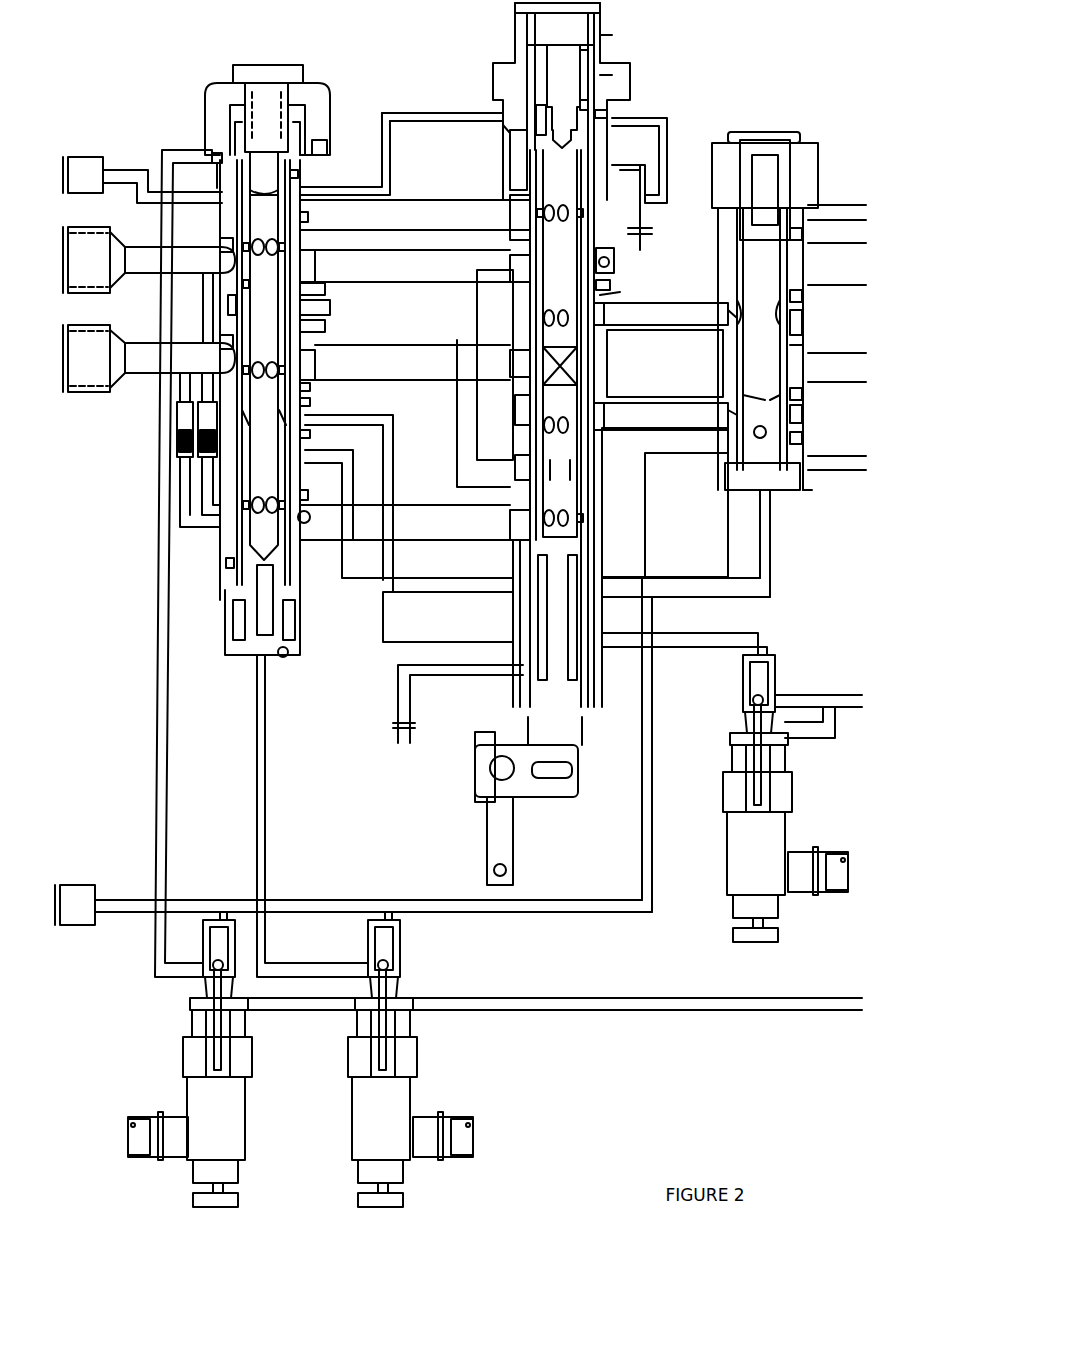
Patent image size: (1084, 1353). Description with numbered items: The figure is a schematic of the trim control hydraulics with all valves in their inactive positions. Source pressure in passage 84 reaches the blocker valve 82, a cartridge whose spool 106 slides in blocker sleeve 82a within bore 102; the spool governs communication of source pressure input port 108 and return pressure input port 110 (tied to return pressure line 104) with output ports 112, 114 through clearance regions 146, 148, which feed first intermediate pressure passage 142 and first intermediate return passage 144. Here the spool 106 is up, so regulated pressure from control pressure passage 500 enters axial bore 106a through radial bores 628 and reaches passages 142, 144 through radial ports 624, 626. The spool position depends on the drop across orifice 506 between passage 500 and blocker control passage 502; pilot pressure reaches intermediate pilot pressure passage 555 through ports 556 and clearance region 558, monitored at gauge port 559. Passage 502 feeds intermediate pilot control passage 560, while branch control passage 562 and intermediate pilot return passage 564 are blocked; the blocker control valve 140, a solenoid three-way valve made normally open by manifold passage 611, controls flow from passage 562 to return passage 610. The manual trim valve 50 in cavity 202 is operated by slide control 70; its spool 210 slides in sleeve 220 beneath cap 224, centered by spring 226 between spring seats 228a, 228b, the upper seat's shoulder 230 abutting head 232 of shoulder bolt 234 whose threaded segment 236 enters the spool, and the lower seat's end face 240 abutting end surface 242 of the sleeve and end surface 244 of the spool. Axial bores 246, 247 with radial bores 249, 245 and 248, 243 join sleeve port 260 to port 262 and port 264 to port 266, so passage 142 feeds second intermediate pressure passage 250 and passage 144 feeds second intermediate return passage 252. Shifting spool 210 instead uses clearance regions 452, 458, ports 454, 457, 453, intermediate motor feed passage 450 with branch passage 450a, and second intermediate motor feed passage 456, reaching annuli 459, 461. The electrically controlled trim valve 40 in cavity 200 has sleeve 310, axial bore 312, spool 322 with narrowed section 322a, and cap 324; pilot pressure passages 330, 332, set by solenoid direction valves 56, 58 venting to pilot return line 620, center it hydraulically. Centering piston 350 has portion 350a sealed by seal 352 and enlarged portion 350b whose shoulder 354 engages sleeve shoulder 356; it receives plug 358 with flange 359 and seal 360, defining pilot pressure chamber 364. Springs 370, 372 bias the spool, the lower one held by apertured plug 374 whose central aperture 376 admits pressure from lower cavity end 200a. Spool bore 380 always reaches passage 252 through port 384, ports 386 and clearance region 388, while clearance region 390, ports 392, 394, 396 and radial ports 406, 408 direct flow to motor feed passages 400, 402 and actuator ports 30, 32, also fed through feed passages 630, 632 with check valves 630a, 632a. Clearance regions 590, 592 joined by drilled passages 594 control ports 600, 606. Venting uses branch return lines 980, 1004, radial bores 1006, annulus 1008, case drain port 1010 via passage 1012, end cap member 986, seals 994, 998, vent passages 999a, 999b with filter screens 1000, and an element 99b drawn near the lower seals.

The actuator port 30 is at (80, 368).
The actuator port 32 is at (80, 270).
The electrically controlled trim valve 40 is at (268, 50).
The manual trim valve 50 is at (626, 8).
The solenoid operated direction valve 56 is at (255, 1125).
The solenoid operated direction valve 58 is at (420, 1100).
The slide control 70 is at (465, 832).
The blocker valve 82 is at (772, 110).
The blocker sleeve 82a is at (815, 195).
The source pressure passage 84 is at (840, 272).
The spool end 99b is at (590, 650).
The bore 102 is at (803, 414).
The return pressure line 104 is at (820, 374).
The blocker spool 106 is at (803, 323).
The axial bore 106a is at (725, 353).
The source pressure input port 108 is at (805, 238).
The return pressure input port 110 is at (800, 352).
The pressure output port 112 is at (735, 318).
The return output port 114 is at (735, 416).
The blocker control valve 140 is at (735, 915).
The first intermediate pressure passage 142 is at (650, 324).
The first intermediate return passage 144 is at (645, 420).
The clearance region 146 is at (803, 296).
The clearance region 148 is at (803, 394).
The cavity 200 is at (311, 405).
The lower end of cavity 200a is at (283, 658).
The cavity 202 is at (614, 264).
The spool 210 is at (548, 378).
The sleeve 220 is at (610, 287).
The cap 224 is at (515, 8).
The spring 226 is at (527, 32).
The upper spring seat 228a is at (612, 32).
The lower spring seat 228b is at (590, 100).
The shoulder 230 is at (585, 55).
The head 232 is at (550, 38).
The shoulder bolt 234 is at (552, 82).
The threaded segment 236 is at (540, 115).
The end face 240 is at (518, 140).
The end surface 242 is at (607, 114).
The radial bores 243 is at (563, 505).
The end surface 244 is at (595, 108).
The radial bores 245 is at (560, 223).
The axial bore 246 is at (548, 268).
The axial bore 247 is at (558, 471).
The radial bores 248 is at (559, 436).
The radial bores 249 is at (559, 327).
The second intermediate pressure passage 250 is at (428, 224).
The second intermediate return passage 252 is at (403, 530).
The sleeve port 260 is at (603, 316).
The sleeve port 262 is at (512, 236).
The sleeve port 264 is at (606, 406).
The sleeve port 266 is at (510, 521).
The sleeve 310 is at (312, 330).
The axial bore 312 is at (310, 320).
The spool 322 is at (280, 345).
The narrowed section 322a is at (272, 565).
The cap 324 is at (290, 66).
The pilot pressure passage 330 is at (165, 825).
The pilot pressure passage 332 is at (265, 825).
The centering piston 350 is at (264, 173).
The piston portion 350a is at (212, 156).
The enlarged portion 350b is at (310, 125).
The seal 352 is at (298, 184).
The shoulder 354 is at (327, 148).
The shoulder 356 is at (265, 116).
The plug 358 is at (266, 184).
The flange 359 is at (308, 220).
The seal 360 is at (225, 125).
The pilot pressure chamber 364 is at (280, 95).
The biasing spring 370 is at (222, 86).
The biasing spring 372 is at (240, 648).
The apertured plug 374 is at (290, 642).
The central aperture 376 is at (257, 690).
The axial bore 380 is at (260, 284).
The port 384 is at (309, 496).
The ports 386 is at (245, 500).
The annular clearance region 388 is at (226, 563).
The annular clearance region 390 is at (237, 308).
The ports 392 is at (318, 288).
The ports 394 is at (220, 246).
The ports 396 is at (220, 342).
The motor actuator feed passage 400 is at (135, 272).
The motor feed passage 402 is at (135, 371).
The radial ports 406 is at (264, 382).
The radial ports 408 is at (264, 256).
The intermediate motor feed passage 450 is at (410, 273).
The branch passage 450a is at (470, 418).
The annular clearance region 452 is at (620, 296).
The ports 453 is at (518, 468).
The sleeve port 454 is at (515, 267).
The second intermediate motor feed passage 456 is at (403, 372).
The ports 457 is at (510, 370).
The clearance region 458 is at (515, 412).
The annulus 459 is at (320, 274).
The annulus 461 is at (315, 358).
The control pressure passage 500 is at (820, 466).
The blocker control passage 502 is at (770, 585).
The orifice 506 is at (760, 520).
The intermediate pilot pressure passage 555 is at (647, 518).
The ports 556 is at (808, 495).
The clearance region 558 is at (803, 438).
The gauge port 559 is at (64, 885).
The intermediate pilot control passage 560 is at (415, 580).
The branch control passage 562 is at (675, 635).
The intermediate pilot return passage 564 is at (405, 640).
The annular clearance region 590 is at (311, 387).
The annular clearance region 592 is at (311, 436).
The drilled passages 594 is at (264, 427).
The radial ports 600 is at (345, 415).
The ports 606 is at (325, 465).
The intermediate return passage 610 is at (788, 695).
The manifold passage 611 is at (808, 738).
The pilot return line 620 is at (505, 1010).
The radial ports 624 is at (775, 305).
The radial ports 626 is at (761, 400).
The radial bores 628 is at (728, 443).
The feed passage 630 is at (180, 490).
The check valve 630a is at (177, 445).
The feed passage 632 is at (202, 500).
The check valve 632a is at (198, 452).
The branch return line 980 is at (660, 138).
The end cap member 986 is at (805, 150).
The seal 994 is at (645, 186).
The seal 998 is at (592, 682).
The vent passage 999a is at (640, 168).
The vent passage 999b is at (422, 672).
The filter screen 1000 is at (652, 228).
The branch return line 1004 is at (386, 110).
The radial bores 1006 is at (312, 198).
The annulus 1008 is at (503, 127).
The case drain port 1010 is at (88, 162).
The passage 1012 is at (118, 170).